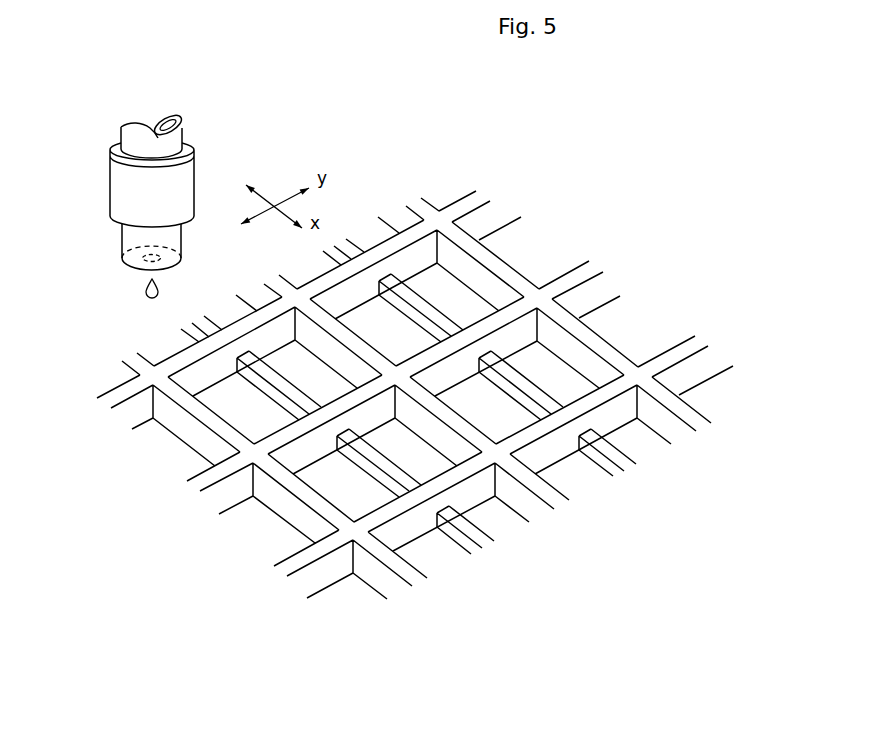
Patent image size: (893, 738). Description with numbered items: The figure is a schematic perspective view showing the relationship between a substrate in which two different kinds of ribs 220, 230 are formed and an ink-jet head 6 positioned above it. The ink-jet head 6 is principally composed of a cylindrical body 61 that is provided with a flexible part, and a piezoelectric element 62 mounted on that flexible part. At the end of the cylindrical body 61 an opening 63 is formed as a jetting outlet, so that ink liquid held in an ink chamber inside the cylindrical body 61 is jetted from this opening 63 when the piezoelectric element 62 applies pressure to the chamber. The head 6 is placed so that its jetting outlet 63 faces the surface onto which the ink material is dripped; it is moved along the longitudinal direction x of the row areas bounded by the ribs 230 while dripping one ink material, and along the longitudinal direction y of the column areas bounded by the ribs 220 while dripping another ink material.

The ink-jet head 6 is at (161, 176).
The cylindrical body 61 is at (172, 142).
The piezoelectric element 62 is at (173, 183).
The opening 63 is at (138, 262).
The rib 220 is at (512, 277).
The rib 230 is at (542, 391).